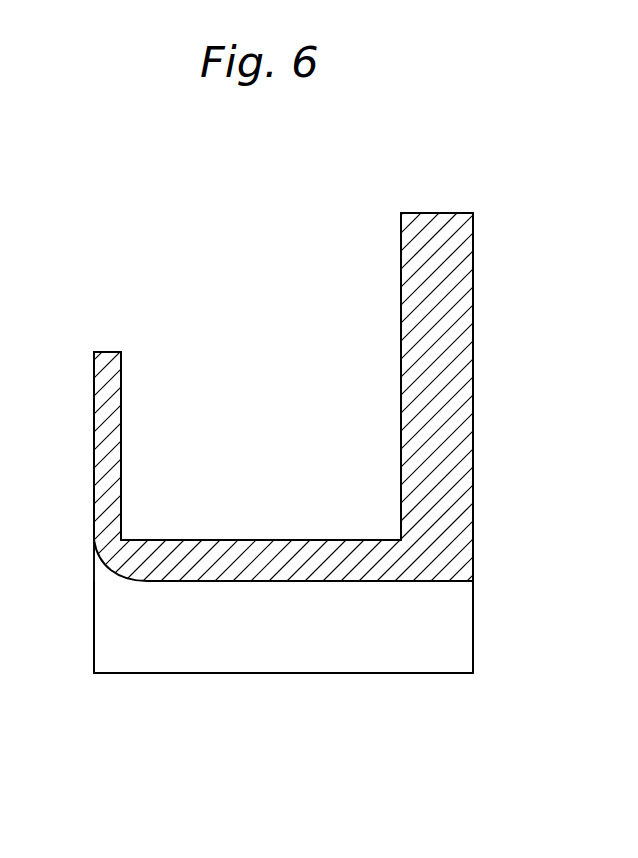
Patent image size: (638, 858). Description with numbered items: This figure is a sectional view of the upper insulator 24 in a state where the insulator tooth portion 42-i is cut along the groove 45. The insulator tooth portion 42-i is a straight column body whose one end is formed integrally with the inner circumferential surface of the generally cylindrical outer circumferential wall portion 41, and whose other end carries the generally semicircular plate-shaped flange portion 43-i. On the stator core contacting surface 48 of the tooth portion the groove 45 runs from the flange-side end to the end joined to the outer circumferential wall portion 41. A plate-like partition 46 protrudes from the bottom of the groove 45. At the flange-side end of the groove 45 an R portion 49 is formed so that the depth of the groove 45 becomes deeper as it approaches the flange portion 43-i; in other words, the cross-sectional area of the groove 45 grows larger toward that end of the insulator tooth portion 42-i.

The upper insulator 24 is at (143, 205).
The outer circumferential wall portion 41 is at (435, 213).
The flange portion 43-i is at (107, 352).
The insulator tooth portion 42-i is at (281, 540).
The R portion 49 is at (113, 567).
The groove 45 is at (283, 581).
The partition 46 is at (436, 660).
The stator core contacting surface 48 is at (202, 673).